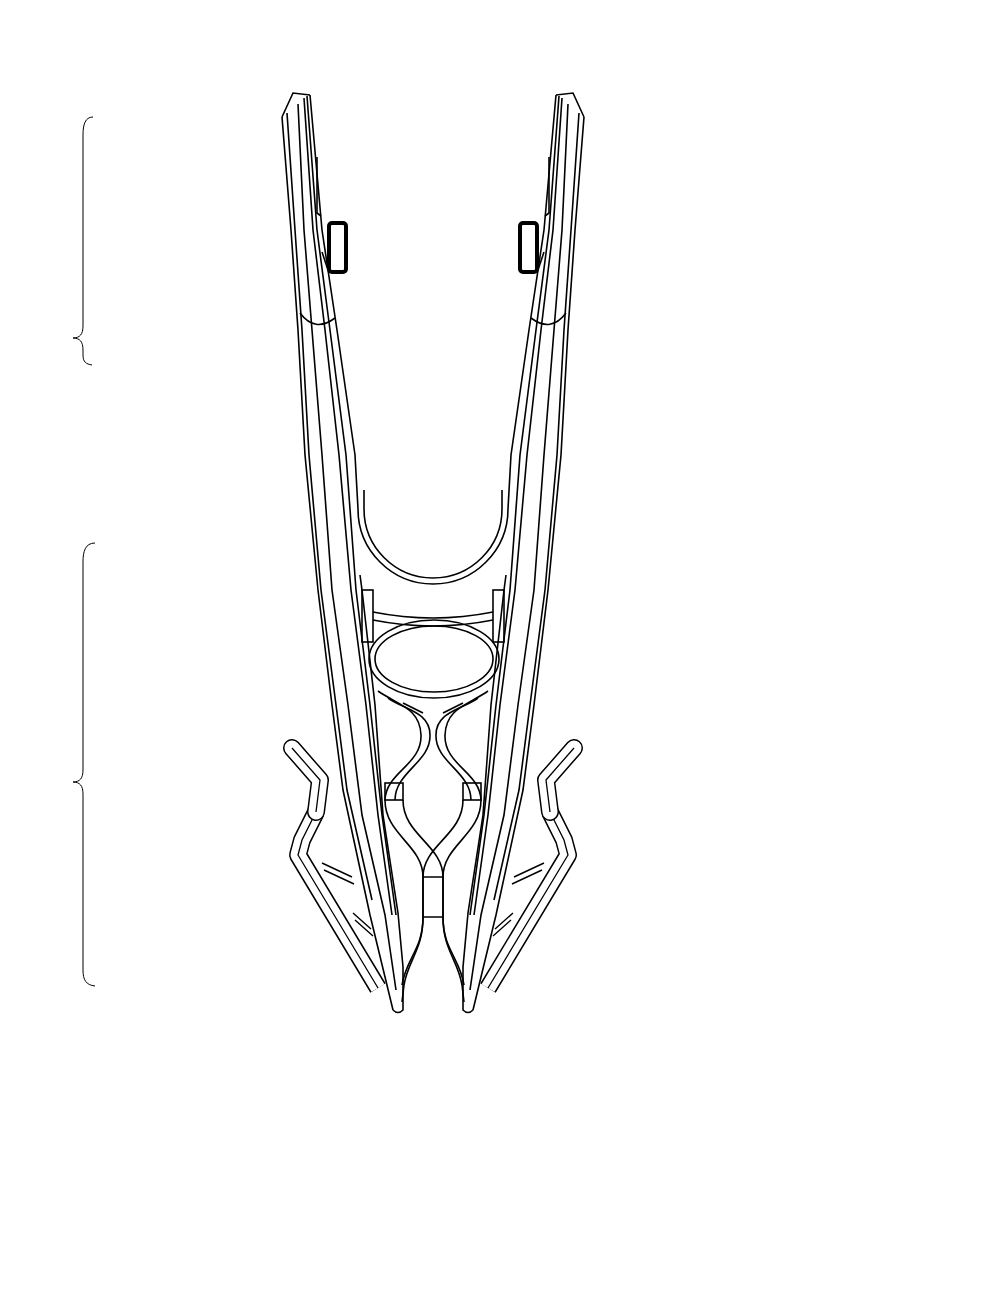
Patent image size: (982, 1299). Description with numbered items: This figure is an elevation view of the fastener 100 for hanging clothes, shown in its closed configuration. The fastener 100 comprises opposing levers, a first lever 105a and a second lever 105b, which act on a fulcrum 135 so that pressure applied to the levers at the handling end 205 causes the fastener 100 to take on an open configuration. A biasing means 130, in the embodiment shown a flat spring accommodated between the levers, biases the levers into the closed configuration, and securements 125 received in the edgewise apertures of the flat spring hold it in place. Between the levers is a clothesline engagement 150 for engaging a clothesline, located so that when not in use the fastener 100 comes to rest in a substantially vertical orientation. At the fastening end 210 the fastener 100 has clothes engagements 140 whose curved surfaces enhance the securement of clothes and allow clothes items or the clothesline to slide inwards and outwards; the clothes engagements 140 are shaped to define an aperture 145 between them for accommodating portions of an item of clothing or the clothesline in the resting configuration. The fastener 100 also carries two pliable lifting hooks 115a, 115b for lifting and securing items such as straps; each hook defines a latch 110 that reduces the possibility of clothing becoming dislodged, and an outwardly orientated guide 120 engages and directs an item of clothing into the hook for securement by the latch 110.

The fastener 100 is at (680, 88).
The first lever 105a is at (583, 249).
The second lever 105b is at (290, 270).
The latch 110 is at (558, 805).
The hook 115a is at (688, 806).
The hook 115b is at (270, 862).
The guide 120 is at (578, 772).
The securements 125 is at (290, 238).
The biasing means 130 is at (350, 574).
The fulcrum 135 is at (352, 606).
The clothes engagements 140 is at (405, 742).
The aperture 145 is at (400, 792).
The clothesline engagement 150 is at (437, 670).
The handling end 205 is at (60, 241).
The fastening end 210 is at (61, 764).